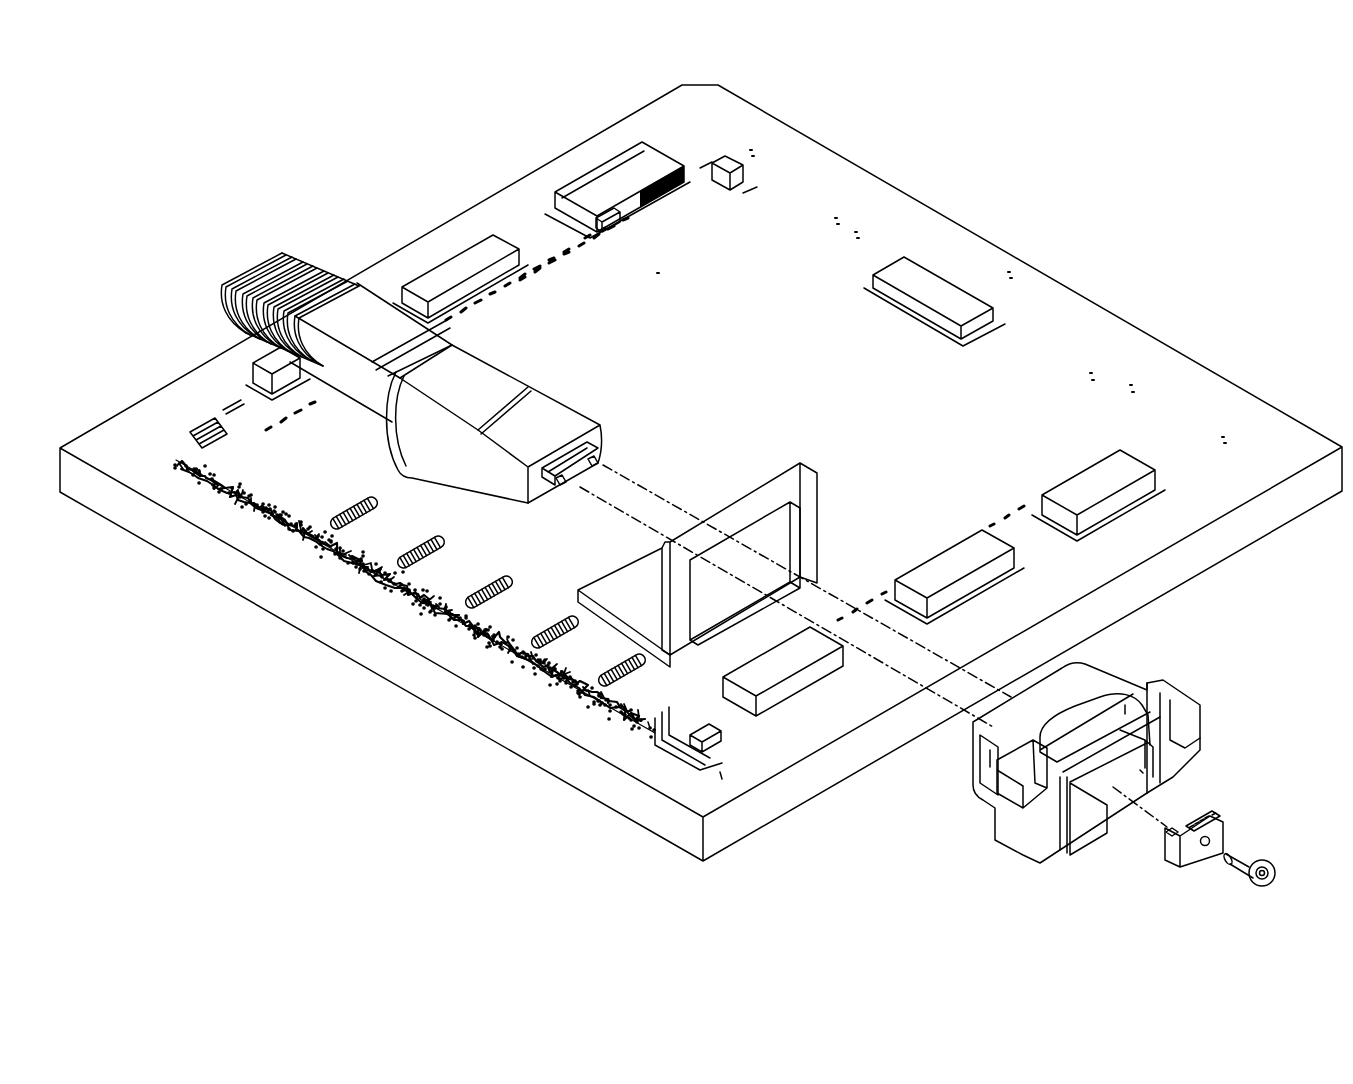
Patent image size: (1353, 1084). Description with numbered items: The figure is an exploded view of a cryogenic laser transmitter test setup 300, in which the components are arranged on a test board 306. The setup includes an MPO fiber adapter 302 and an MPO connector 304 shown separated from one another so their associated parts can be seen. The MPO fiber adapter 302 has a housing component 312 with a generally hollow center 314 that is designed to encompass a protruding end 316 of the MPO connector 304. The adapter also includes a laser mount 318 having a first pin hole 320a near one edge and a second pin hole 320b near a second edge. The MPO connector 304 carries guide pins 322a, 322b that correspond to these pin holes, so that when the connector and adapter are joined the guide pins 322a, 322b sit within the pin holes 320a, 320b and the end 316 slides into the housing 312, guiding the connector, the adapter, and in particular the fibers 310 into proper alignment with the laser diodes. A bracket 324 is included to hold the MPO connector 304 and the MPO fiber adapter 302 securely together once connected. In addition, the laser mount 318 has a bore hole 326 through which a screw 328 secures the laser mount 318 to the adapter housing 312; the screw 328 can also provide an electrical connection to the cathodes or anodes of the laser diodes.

The cryogenic laser transmitter test setup 300 is at (212, 213).
The MPO fiber adapter 302 is at (952, 811).
The MPO connector 304 is at (400, 425).
The test board 306 is at (1068, 297).
The fibers 310 is at (578, 460).
The housing component 312 is at (1087, 677).
The hollow center 314 is at (1127, 756).
The protruding end 316 is at (513, 485).
The laser mount 318 is at (1180, 862).
The first pin hole 320a is at (1165, 840).
The second pin hole 320b is at (1222, 828).
The guide pin 322a is at (566, 484).
The guide pin 322b is at (603, 462).
The bracket 324 is at (790, 480).
The bore hole 326 is at (1207, 842).
The screw 328 is at (1232, 870).